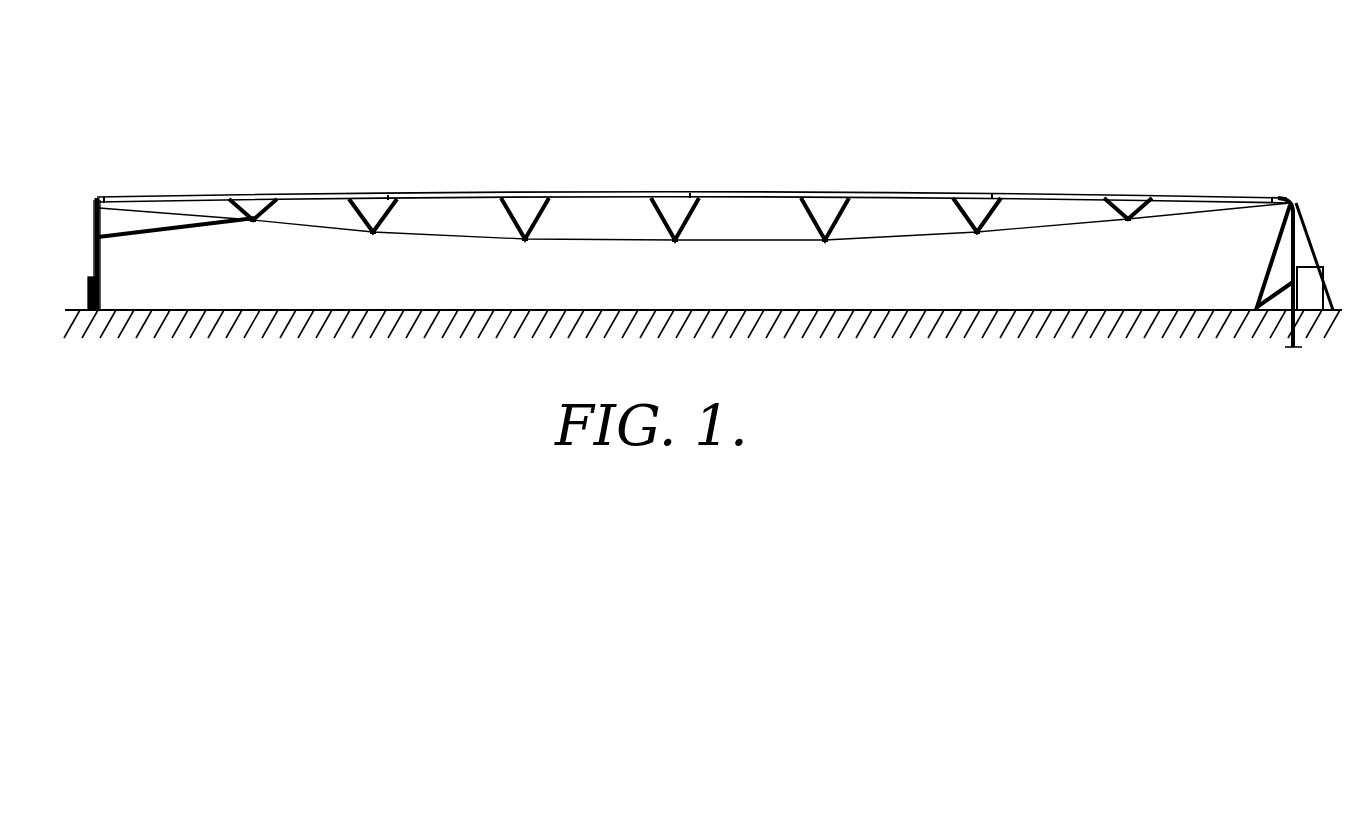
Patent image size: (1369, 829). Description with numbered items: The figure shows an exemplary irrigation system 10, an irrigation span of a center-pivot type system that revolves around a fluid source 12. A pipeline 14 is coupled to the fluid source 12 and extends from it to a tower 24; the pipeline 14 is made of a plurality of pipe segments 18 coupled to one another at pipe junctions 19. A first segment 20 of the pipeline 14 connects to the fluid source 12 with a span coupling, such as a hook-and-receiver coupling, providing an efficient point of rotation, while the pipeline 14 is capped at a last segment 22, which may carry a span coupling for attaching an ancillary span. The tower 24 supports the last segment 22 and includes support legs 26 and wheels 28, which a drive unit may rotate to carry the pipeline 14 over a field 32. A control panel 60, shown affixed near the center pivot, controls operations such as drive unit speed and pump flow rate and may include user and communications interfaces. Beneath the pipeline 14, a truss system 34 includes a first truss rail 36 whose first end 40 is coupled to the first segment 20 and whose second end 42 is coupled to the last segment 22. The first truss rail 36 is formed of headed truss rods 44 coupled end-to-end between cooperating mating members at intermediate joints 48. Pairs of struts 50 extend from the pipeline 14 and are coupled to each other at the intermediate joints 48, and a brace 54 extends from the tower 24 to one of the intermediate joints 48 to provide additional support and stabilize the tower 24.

The irrigation system 10 is at (1264, 88).
The fluid source 12 is at (1293, 280).
The pipeline 14 is at (448, 192).
The pipe segments 18 is at (313, 192).
The pipe junctions 19 is at (107, 200).
The first segment 20 is at (1273, 200).
The last segment 22 is at (97, 197).
The tower 24 is at (84, 244).
The support legs 26 is at (102, 262).
The wheels 28 is at (87, 293).
The field 32 is at (498, 306).
The truss system 34 is at (885, 245).
The first truss rail 36 is at (1095, 228).
The first end 40 is at (1272, 212).
The second end 42 is at (118, 212).
The headed truss rods 44 is at (186, 212).
The intermediate joints 48 is at (253, 235).
The struts 50 is at (1142, 170).
The brace 54 is at (187, 228).
The control panel 60 is at (1315, 285).